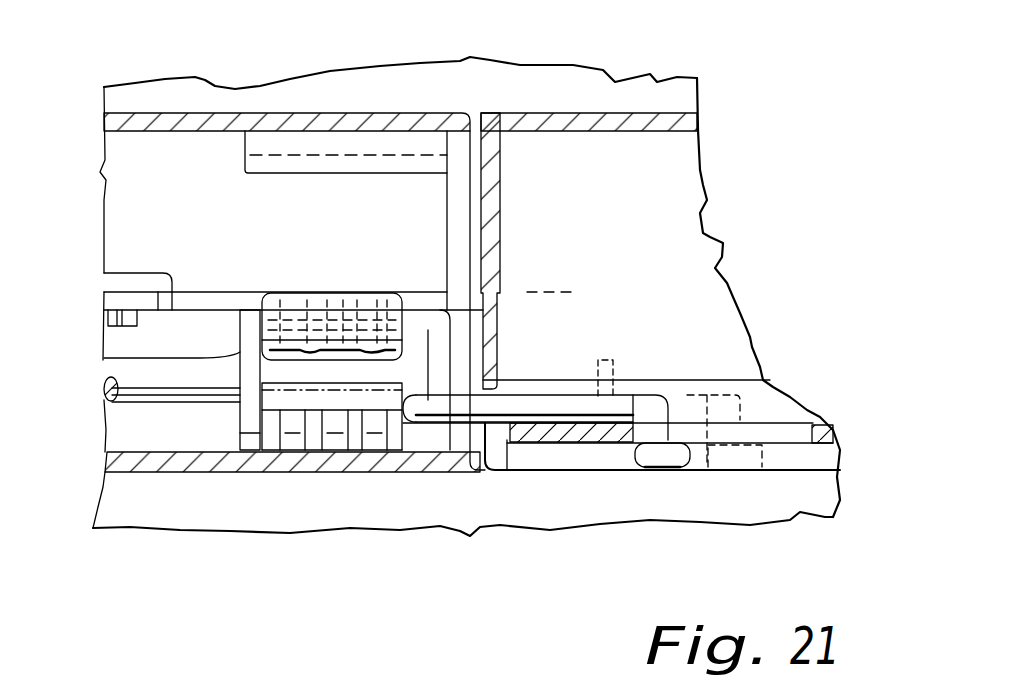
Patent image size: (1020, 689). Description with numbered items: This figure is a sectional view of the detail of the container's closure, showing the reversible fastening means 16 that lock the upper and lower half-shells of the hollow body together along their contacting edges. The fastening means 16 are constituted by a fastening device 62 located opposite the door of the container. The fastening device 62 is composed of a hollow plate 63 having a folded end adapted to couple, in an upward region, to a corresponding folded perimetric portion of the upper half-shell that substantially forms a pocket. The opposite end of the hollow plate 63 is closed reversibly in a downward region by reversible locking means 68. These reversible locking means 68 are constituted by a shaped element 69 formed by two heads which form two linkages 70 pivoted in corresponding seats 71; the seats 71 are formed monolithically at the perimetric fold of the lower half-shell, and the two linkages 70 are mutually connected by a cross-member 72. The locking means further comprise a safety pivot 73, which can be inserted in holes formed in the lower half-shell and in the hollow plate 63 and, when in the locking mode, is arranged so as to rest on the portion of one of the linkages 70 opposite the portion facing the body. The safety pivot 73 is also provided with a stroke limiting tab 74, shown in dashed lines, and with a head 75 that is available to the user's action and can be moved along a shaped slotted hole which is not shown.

The reversible fastening means 16 is at (483, 540).
The fastening device 62 is at (290, 452).
The hollow plate 63 is at (127, 463).
The reversible locking means 68 is at (300, 284).
The shaped element 69 is at (125, 344).
The linkages 70 is at (355, 455).
The seats 71 is at (348, 300).
The cross-member 72 is at (176, 373).
The safety pivot 73 is at (543, 400).
The stroke limiting tab 74 is at (612, 368).
The head 75 is at (658, 460).